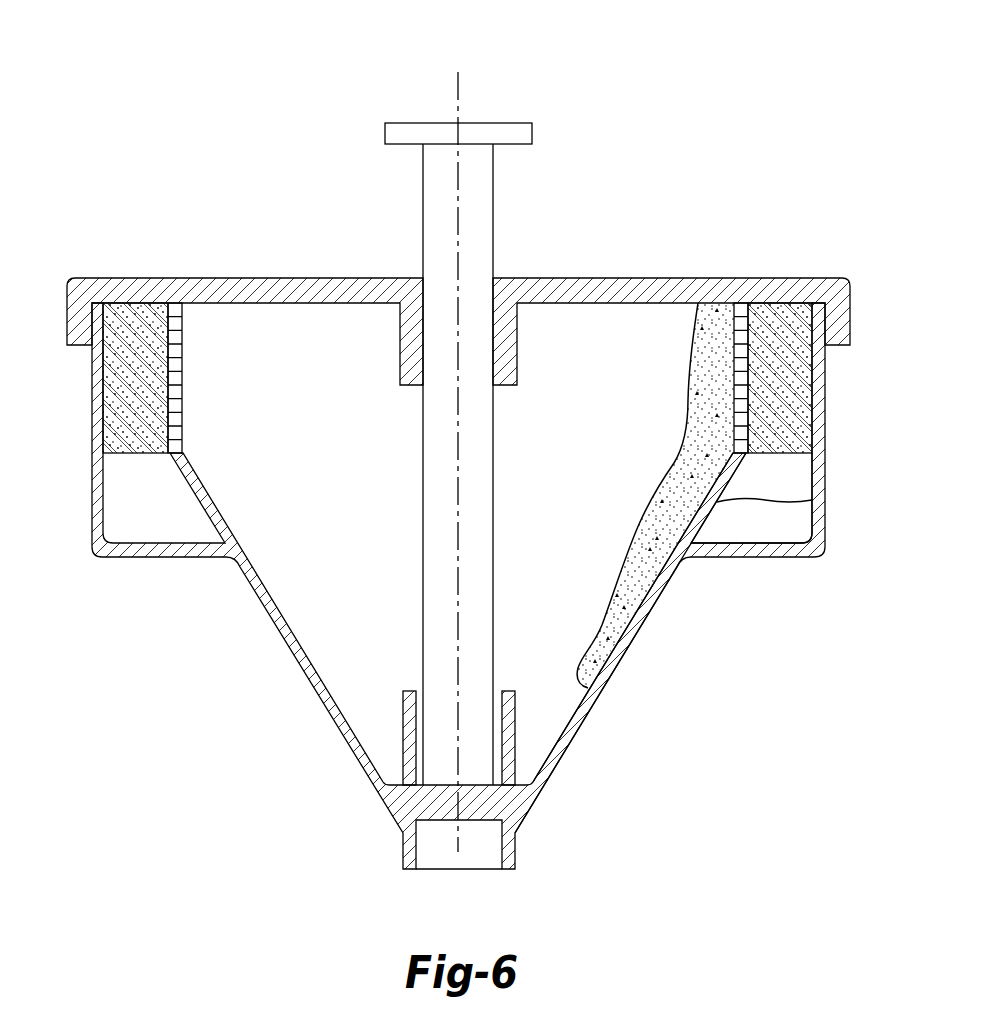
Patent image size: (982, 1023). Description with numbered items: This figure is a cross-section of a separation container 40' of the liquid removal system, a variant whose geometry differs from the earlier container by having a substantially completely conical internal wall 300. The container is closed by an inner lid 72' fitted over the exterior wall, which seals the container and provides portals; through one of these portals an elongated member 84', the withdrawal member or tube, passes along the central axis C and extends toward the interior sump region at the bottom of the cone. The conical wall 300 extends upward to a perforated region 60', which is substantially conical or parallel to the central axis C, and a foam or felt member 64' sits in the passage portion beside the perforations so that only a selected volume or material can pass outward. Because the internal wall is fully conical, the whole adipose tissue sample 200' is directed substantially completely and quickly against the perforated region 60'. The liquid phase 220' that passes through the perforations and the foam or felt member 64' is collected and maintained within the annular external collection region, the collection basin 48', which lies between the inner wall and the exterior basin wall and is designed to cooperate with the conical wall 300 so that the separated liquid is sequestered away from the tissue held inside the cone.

The separation container 40' is at (458, 586).
The inner lid 72' is at (458, 298).
The elongated member 84' is at (477, 454).
The central axis C is at (458, 84).
The perforated region 60' is at (458, 378).
The foam or felt member 64' is at (466, 378).
The annular collection basin 48' is at (764, 482).
The liquid phase 220' is at (798, 498).
The whole adipose tissue sample 200' is at (644, 495).
The conical internal wall 300 is at (615, 667).